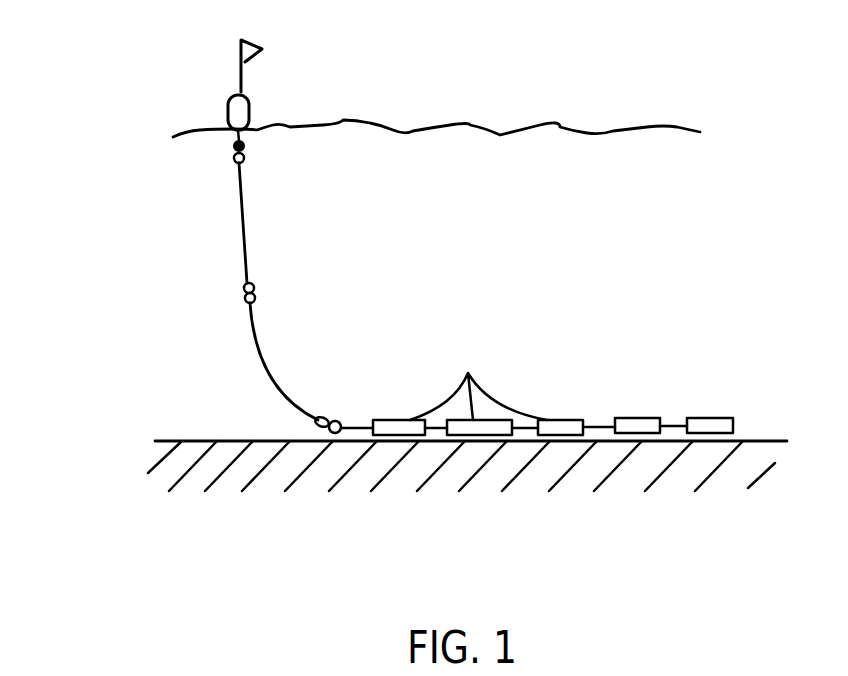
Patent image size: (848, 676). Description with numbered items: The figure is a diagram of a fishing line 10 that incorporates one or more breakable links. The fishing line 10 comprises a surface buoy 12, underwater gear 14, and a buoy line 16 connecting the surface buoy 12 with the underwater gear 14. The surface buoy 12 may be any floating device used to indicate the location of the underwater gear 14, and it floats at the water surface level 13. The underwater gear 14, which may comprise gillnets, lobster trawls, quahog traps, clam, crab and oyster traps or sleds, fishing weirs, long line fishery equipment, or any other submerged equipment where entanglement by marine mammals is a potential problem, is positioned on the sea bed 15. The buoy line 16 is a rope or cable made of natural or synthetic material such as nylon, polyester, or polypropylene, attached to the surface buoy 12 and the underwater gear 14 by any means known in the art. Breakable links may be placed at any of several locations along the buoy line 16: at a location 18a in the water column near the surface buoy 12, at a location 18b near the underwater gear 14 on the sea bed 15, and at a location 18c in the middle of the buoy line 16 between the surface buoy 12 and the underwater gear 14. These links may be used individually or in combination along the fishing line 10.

The fishing line 10 is at (192, 321).
The surface buoy 12 is at (226, 103).
The water surface level 13 is at (681, 128).
The underwater gear 14 is at (553, 387).
The sea bed 15 is at (763, 441).
The buoy line 16 is at (241, 222).
The breakable link location 18a is at (246, 156).
The breakable link location 18b is at (329, 418).
The breakable link location 18c is at (258, 296).